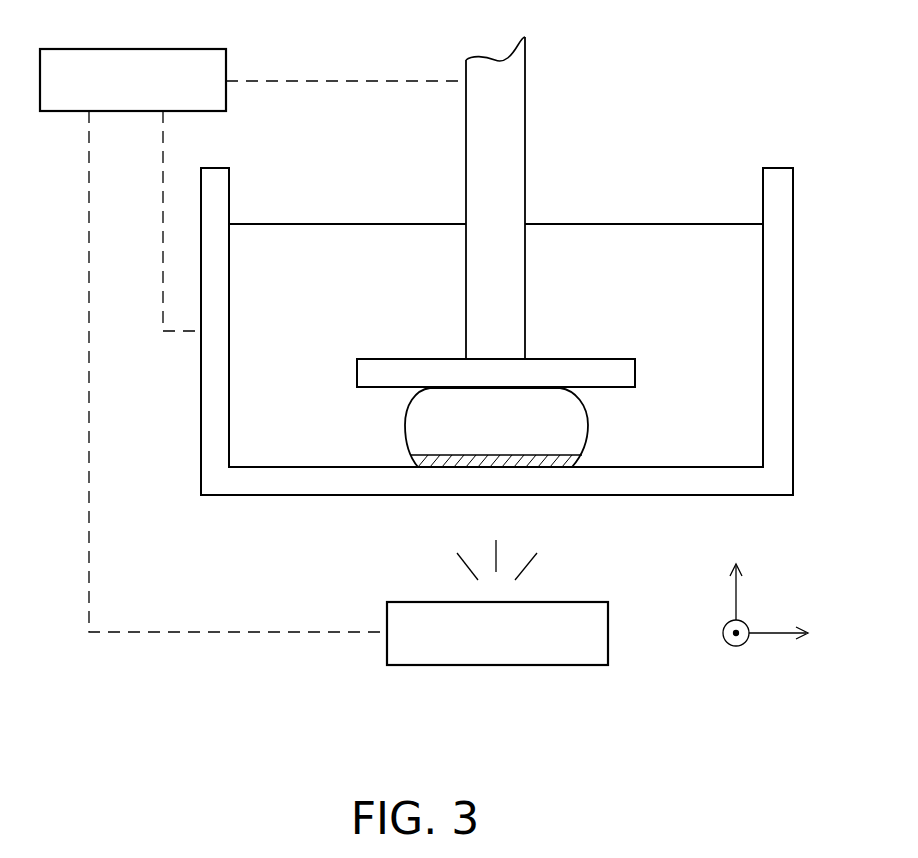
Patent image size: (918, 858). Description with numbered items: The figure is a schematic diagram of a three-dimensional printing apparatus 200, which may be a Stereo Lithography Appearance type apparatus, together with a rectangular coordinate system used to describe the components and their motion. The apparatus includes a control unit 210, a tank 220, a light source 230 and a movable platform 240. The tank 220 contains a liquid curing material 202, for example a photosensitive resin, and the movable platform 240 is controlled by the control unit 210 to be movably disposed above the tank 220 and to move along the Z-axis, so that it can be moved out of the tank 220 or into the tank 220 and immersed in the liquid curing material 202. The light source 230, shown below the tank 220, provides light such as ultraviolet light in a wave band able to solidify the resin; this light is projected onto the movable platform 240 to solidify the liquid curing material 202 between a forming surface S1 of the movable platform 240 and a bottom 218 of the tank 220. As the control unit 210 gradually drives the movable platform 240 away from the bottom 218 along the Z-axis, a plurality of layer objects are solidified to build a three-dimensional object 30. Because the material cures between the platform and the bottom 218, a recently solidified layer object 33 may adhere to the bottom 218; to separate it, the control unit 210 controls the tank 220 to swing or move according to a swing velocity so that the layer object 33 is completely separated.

The 3D printing apparatus 200 is at (781, 757).
The liquid curing material 202 is at (683, 243).
The control unit 210 is at (180, 49).
The bottom of the tank 218 is at (278, 471).
The tank 220 is at (776, 183).
The light source 230 is at (608, 635).
The movable platform 240 is at (507, 118).
The forming surface S1 is at (382, 391).
The 3D object 30 is at (562, 430).
The layer object 33 is at (417, 455).